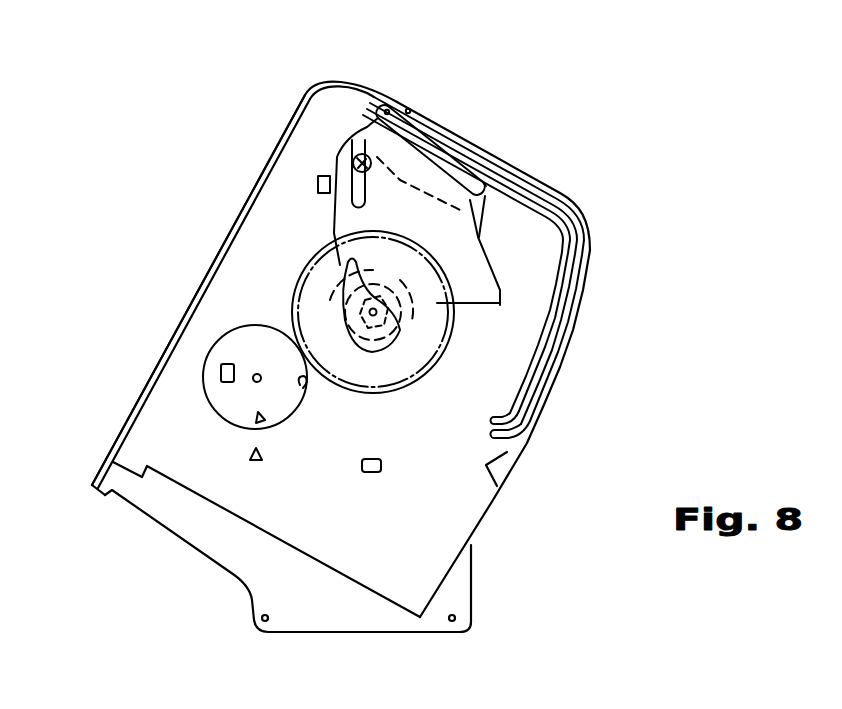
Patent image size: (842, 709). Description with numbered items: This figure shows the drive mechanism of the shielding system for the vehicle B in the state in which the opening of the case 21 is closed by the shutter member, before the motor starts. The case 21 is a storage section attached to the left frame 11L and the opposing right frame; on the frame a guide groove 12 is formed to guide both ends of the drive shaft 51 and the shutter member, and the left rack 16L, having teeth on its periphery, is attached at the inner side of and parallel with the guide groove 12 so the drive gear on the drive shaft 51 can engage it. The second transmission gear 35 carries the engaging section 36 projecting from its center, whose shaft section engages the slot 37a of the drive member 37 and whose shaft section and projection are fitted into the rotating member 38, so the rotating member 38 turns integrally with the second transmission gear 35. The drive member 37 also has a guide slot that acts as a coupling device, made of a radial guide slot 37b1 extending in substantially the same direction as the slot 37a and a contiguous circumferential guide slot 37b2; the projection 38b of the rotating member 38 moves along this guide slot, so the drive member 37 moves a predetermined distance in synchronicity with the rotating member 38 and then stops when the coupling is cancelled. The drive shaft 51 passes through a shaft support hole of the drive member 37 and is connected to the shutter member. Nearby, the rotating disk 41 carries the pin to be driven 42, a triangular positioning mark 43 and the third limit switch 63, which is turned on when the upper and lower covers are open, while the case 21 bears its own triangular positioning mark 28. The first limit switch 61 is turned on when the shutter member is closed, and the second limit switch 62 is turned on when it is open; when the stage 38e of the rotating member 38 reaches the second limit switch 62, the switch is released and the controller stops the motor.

The guide groove 12 is at (262, 177).
The left rack 16L is at (580, 253).
The rotating member 38 is at (483, 281).
The stage 38e is at (502, 305).
The left frame 11L is at (308, 632).
The drive member 37 is at (433, 170).
The drive shaft 51 is at (394, 108).
The circumferential guide slot 37b2 is at (480, 180).
The projection 38b is at (355, 158).
The radial guide slot 37b1 is at (358, 203).
The first limit switch 61 is at (318, 185).
The second transmission gear 35 is at (422, 362).
The engaging section 36 is at (378, 335).
The slot 37a is at (348, 268).
The rotating disk 41 is at (213, 387).
The third limit switch 63 is at (221, 370).
The pin to be driven 42 is at (300, 388).
The triangular positioning mark 43 is at (258, 418).
The triangular positioning mark 28 is at (256, 460).
The second limit switch 62 is at (378, 472).
The case 21 is at (150, 410).
The vehicle B is at (128, 537).